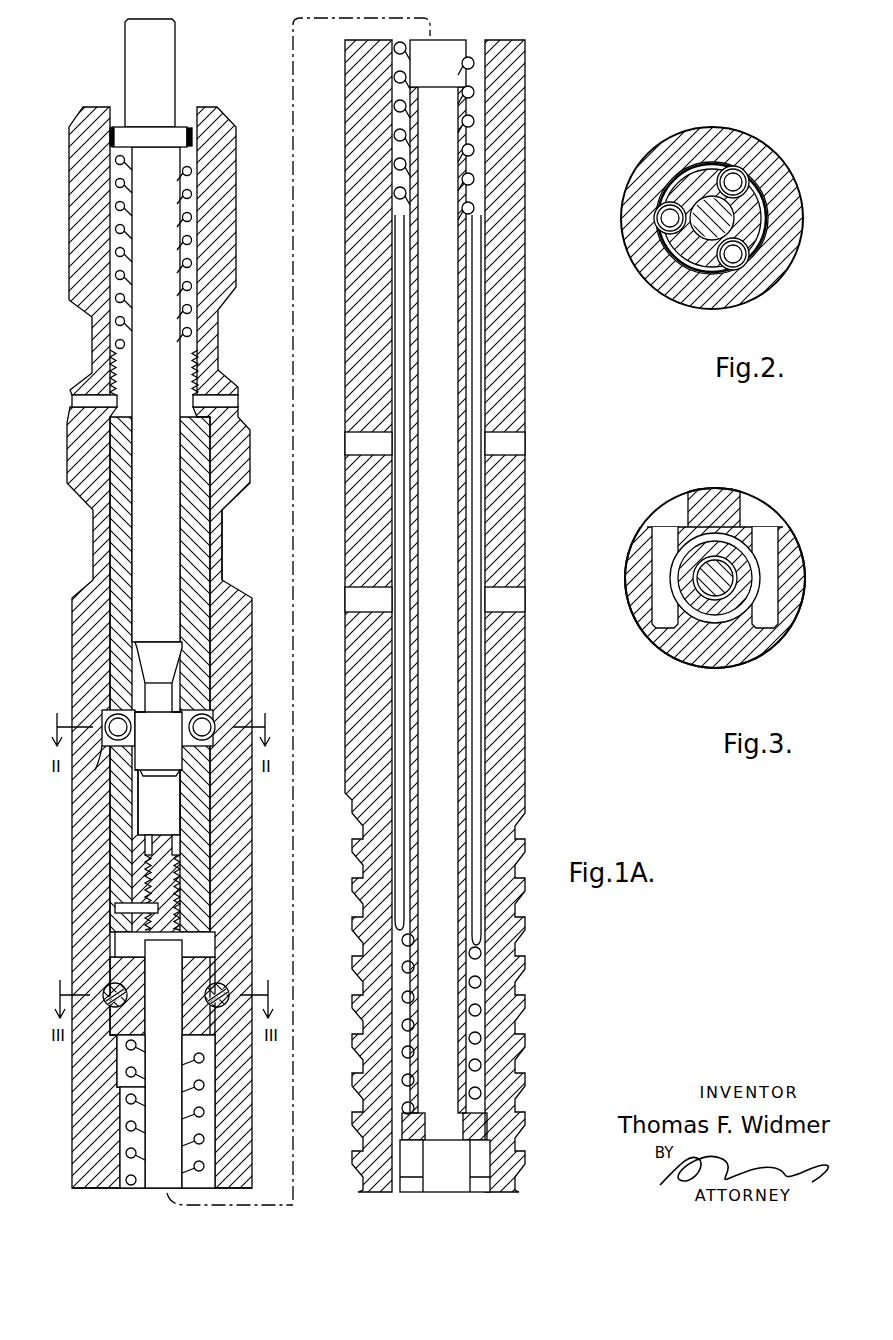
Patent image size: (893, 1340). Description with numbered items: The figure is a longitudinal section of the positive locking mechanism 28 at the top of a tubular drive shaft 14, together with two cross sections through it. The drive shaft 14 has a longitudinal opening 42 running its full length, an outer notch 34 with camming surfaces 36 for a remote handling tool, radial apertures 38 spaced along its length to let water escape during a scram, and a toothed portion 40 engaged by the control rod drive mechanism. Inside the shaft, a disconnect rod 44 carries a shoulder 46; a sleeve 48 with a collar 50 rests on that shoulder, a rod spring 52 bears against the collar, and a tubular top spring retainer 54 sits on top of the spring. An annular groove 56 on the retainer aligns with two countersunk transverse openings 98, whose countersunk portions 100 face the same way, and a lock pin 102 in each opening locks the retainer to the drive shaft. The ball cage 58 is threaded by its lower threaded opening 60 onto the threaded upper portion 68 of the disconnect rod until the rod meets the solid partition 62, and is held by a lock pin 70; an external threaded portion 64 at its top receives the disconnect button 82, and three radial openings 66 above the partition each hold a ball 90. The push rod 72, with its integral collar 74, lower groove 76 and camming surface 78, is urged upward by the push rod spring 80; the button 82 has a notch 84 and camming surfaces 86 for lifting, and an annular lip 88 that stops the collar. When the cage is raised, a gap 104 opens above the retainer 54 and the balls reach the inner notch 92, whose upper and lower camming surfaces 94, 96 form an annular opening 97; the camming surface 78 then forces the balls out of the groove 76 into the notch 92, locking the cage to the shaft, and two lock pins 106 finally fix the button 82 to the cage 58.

In FIG. 1A, the drive shaft 14 is at (238, 457).
In FIG. 2, the drive shaft 14 is at (775, 173).
In FIG. 3, the drive shaft 14 is at (650, 623).
In FIG. 1A, the locking mechanism 28 is at (69, 137).
In FIG. 1A, the notch 34 is at (224, 548).
In FIG. 1A, the camming surfaces 36 is at (80, 592).
In FIG. 1A, the radial apertures 38 is at (512, 444).
In FIG. 1A, the toothed portion 40 is at (525, 953).
In FIG. 1A, the longitudinal opening 42 is at (470, 80).
In FIG. 1A, the disconnect rod 44 is at (444, 42).
In FIG. 3, the disconnect rod 44 is at (706, 575).
In FIG. 1A, the shoulder 46 is at (464, 1136).
In FIG. 1A, the sleeve 48 is at (470, 712).
In FIG. 1A, the collar 50 is at (467, 1132).
In FIG. 1A, the rod spring 52 is at (138, 1132).
In FIG. 1A, the top spring retainer 54 is at (203, 952).
In FIG. 3, the top spring retainer 54 is at (727, 607).
In FIG. 1A, the annular groove 56 is at (207, 976).
In FIG. 3, the annular groove 56 is at (697, 622).
In FIG. 1A, the ball cage 58 is at (200, 645).
In FIG. 2, the ball cage 58 is at (673, 290).
In FIG. 1A, the threaded opening 60 is at (176, 853).
In FIG. 1A, the partition 62 is at (160, 837).
In FIG. 1A, the external threaded portion 64 is at (200, 374).
In FIG. 1A, the radial openings 66 is at (178, 716).
In FIG. 2, the radial openings 66 is at (687, 238).
In FIG. 1A, the threaded upper portion 68 is at (187, 897).
In FIG. 1A, the lock pin 70 is at (118, 906).
In FIG. 1A, the push rod 72 is at (165, 50).
In FIG. 2, the push rod 72 is at (703, 205).
In FIG. 1A, the collar 74 is at (148, 141).
In FIG. 1A, the groove 76 is at (181, 652).
In FIG. 1A, the camming surface 78 is at (177, 692).
In FIG. 1A, the push rod spring 80 is at (187, 250).
In FIG. 1A, the disconnect button 82 is at (228, 147).
In FIG. 1A, the notch 84 is at (222, 346).
In FIG. 1A, the camming surfaces 86 is at (88, 372).
In FIG. 1A, the annular lip 88 is at (118, 128).
In FIG. 1A, the ball 90 is at (185, 733).
In FIG. 1A, the notch 92 is at (105, 724).
In FIG. 1A, the upper camming surface 94 is at (110, 716).
In FIG. 1A, the lower camming surface 96 is at (107, 748).
In FIG. 2, the annular opening 97 is at (690, 185).
In FIG. 3, the transverse openings 98 is at (640, 539).
In FIG. 3, the countersunk portions 100 is at (683, 505).
In FIG. 1A, the lock pin 102 is at (210, 1000).
In FIG. 3, the lock pin 102 is at (660, 604).
In FIG. 1A, the gap 104 is at (125, 945).
In FIG. 1A, the lock pins 106 is at (80, 400).